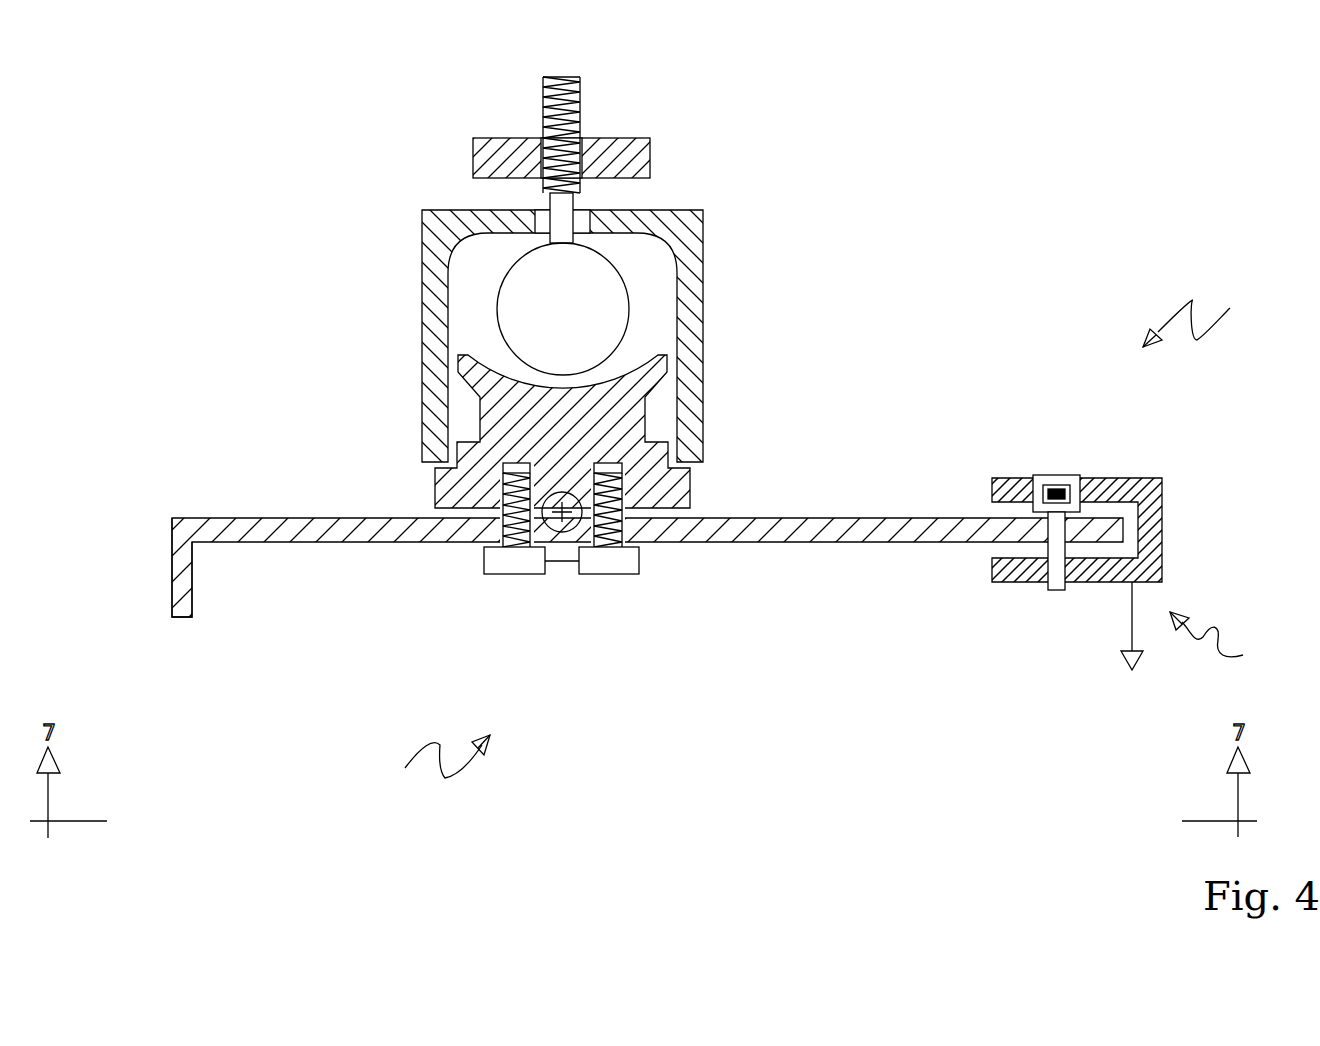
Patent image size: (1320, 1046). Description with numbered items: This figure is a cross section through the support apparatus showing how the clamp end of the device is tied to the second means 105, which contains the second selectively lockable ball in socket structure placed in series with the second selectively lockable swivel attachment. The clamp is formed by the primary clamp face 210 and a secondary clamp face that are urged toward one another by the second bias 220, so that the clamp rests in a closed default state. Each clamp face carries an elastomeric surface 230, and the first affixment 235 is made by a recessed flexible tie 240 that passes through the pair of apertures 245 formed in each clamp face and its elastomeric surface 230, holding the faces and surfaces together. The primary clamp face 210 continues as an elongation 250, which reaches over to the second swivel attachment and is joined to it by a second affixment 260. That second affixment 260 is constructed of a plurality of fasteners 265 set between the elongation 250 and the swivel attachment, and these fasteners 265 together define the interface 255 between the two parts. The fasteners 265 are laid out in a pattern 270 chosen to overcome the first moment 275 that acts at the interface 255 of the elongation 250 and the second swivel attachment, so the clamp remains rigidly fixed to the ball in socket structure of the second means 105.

The second means 105 is at (703, 255).
The primary clamp face 210 is at (867, 518).
The second bias 220 is at (1123, 622).
The elastomeric surfaces 230 is at (1152, 478).
The first affixment 235 is at (1217, 478).
The recessed flexible tie 240 is at (1057, 590).
The pair of apertures 245 is at (1040, 522).
The elongation 250 is at (272, 543).
The interface 255 is at (447, 513).
The second affixment 260 is at (433, 768).
The plurality of fasteners 265 is at (527, 575).
The pattern 270 is at (647, 650).
The first moment 275 is at (584, 490).